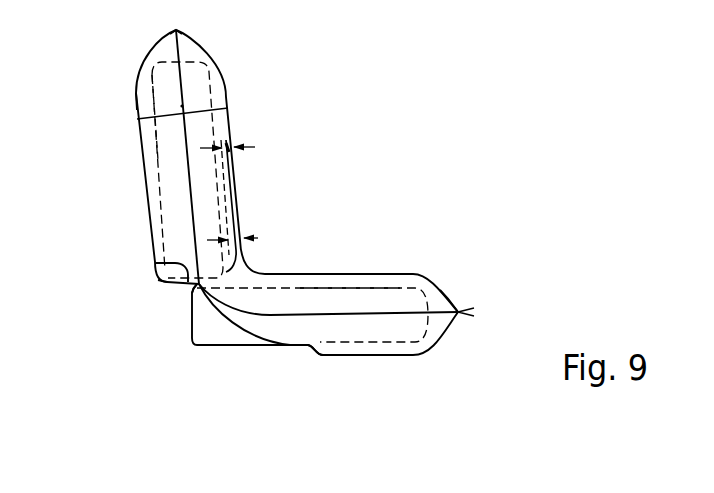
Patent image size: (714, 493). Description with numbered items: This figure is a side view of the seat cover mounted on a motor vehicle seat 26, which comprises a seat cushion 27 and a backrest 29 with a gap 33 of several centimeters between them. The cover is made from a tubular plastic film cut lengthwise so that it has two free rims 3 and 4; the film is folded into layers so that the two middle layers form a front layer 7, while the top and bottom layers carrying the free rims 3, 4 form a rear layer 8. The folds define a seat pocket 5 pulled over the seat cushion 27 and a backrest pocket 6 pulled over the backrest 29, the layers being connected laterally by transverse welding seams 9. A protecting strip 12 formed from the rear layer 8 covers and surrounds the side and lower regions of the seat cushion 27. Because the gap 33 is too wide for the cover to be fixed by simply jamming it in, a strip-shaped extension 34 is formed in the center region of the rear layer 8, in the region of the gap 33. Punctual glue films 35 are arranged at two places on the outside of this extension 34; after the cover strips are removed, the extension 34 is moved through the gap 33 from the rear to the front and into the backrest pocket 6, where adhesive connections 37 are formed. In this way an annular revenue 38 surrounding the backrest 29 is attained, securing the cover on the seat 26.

The free rim 3 is at (458, 312).
The free rim 4 is at (175, 30).
The seat pocket 5 is at (305, 348).
The backrest pocket 6 is at (158, 280).
The front layer 7 is at (233, 156).
The rear layer 8 is at (137, 93).
The transverse welding seam 9 is at (182, 106).
The protecting strip 12 is at (252, 320).
The motor vehicle seat 26 is at (143, 193).
The seat cushion 27 is at (337, 287).
The backrest 29 is at (139, 153).
The gap 33 is at (187, 290).
The strip-shaped extension 34 is at (157, 263).
The punctual glue films 35 is at (234, 172).
The adhesive connection 37 is at (233, 140).
The annular revenue 38 is at (137, 126).